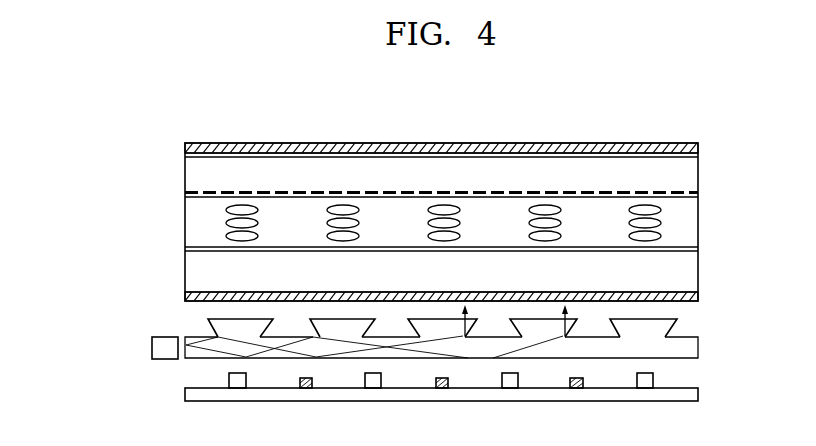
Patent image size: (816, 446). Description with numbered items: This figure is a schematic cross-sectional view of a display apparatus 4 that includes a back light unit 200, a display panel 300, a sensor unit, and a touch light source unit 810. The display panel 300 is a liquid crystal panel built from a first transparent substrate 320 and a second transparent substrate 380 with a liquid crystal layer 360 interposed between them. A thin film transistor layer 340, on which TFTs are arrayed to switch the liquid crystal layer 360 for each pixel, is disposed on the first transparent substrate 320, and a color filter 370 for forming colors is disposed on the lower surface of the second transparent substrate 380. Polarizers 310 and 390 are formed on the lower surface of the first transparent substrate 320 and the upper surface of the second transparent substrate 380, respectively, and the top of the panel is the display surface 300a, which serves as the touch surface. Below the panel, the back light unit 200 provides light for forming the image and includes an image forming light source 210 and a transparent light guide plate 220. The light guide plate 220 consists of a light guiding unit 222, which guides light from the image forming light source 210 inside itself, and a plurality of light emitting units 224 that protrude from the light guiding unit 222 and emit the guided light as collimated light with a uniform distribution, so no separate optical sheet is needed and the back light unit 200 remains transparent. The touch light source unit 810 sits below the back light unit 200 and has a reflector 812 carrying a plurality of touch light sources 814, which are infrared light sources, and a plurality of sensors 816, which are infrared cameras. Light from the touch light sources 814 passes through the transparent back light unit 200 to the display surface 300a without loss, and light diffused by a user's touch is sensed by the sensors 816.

The display apparatus 4 is at (700, 117).
The display panel 300 is at (177, 143).
The display surface 300a is at (243, 142).
The polarizer 390 is at (700, 148).
The second transparent substrate 380 is at (700, 174).
The color filter 370 is at (700, 193).
The liquid crystal layer 360 is at (700, 225).
The thin film transistor layer 340 is at (700, 249).
The first transparent substrate 320 is at (700, 273).
The polarizer 310 is at (700, 297).
The back light unit 200 is at (144, 320).
The image forming light source 210 is at (163, 337).
The transparent light guide plate 220 is at (748, 317).
The light guiding unit 222 is at (700, 348).
The light emitting units 224 is at (680, 320).
The touch light source unit 810 is at (171, 370).
The reflector 812 is at (700, 394).
The touch light sources 814 is at (238, 389).
The sensors 816 is at (306, 389).